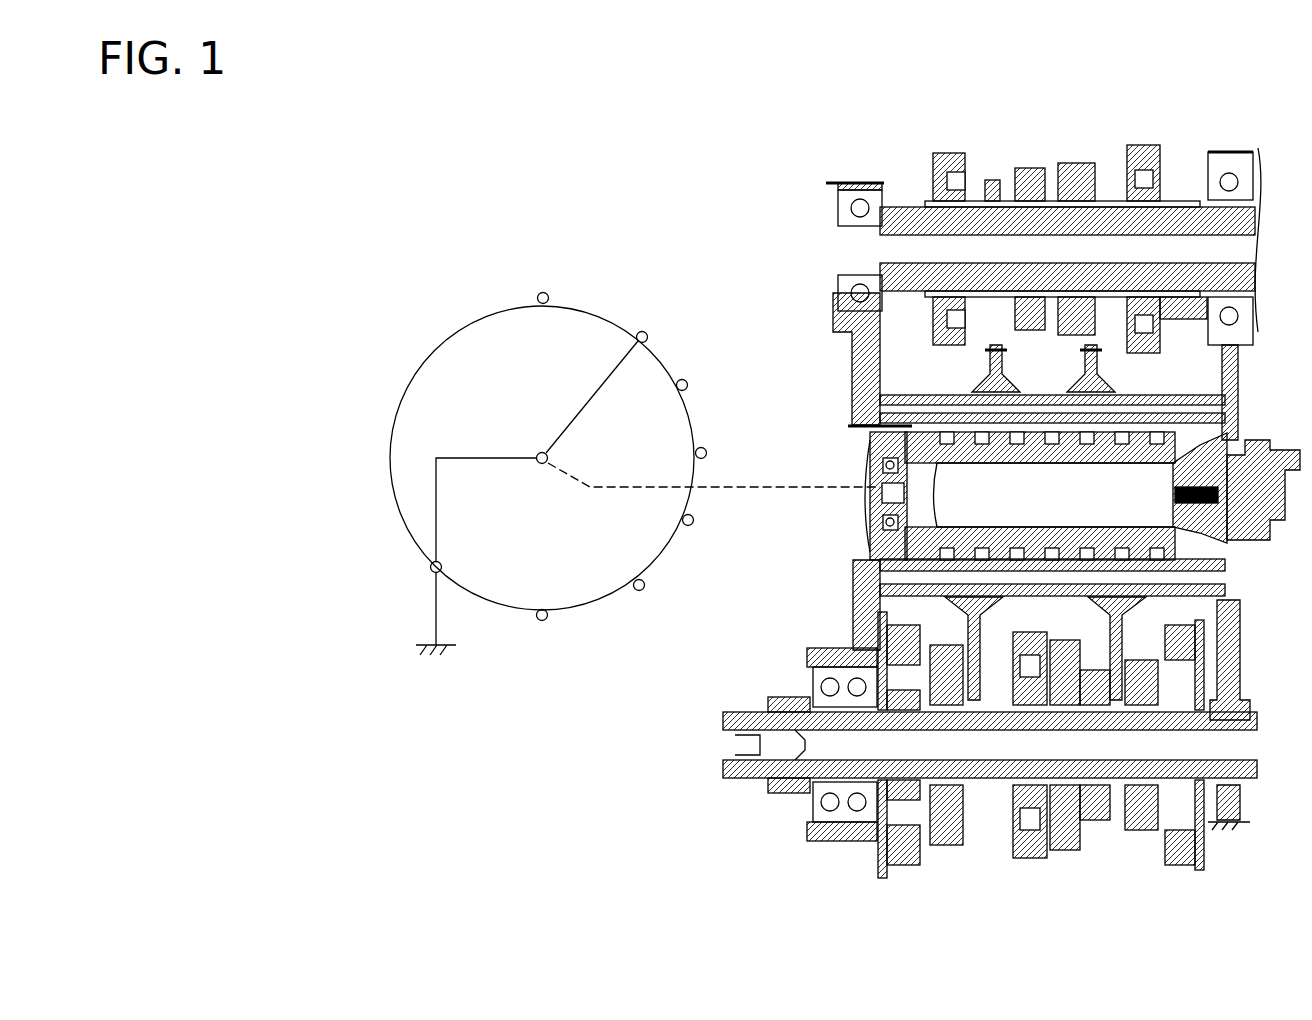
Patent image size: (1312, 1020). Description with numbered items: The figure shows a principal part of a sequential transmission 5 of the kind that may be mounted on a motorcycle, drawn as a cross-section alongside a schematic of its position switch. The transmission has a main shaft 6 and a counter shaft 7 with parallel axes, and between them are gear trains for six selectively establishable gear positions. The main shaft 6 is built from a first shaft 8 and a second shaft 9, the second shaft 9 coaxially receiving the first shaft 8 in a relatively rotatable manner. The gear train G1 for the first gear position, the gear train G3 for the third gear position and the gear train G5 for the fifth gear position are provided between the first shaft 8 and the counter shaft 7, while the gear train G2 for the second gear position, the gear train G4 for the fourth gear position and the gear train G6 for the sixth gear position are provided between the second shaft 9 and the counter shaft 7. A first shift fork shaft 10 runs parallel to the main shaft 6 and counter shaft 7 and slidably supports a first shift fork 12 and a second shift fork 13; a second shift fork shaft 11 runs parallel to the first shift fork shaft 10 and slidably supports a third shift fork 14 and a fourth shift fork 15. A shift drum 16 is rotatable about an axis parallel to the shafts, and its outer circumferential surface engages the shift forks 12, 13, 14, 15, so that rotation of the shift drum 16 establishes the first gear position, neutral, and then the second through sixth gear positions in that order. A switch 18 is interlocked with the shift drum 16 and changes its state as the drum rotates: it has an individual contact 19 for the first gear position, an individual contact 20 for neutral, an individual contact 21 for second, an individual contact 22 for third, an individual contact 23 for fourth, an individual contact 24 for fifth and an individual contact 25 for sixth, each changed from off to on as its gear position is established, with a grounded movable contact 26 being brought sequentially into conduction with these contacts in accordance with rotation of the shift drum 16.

The sequential transmission 5 is at (852, 438).
The main shaft 6 is at (979, 200).
The counter shaft 7 is at (1160, 716).
The first shaft 8 is at (912, 288).
The second shaft 9 is at (1191, 298).
The first shift fork shaft 10 is at (1136, 430).
The second shift fork shaft 11 is at (1058, 598).
The first shift fork 12 is at (1103, 366).
The second shift fork 13 is at (985, 366).
The third shift fork 14 is at (1148, 652).
The fourth shift fork 15 is at (992, 648).
The shift drum 16 is at (1229, 409).
The switch 18 is at (486, 311).
The individual contact for the first gear position 19 is at (546, 620).
The individual contact for the neutral position 20 is at (643, 590).
The individual contact for the second gear position 21 is at (694, 525).
The individual contact for the third gear position 22 is at (706, 450).
The individual contact for the fourth gear position 23 is at (685, 380).
The individual contact for the fifth gear position 24 is at (645, 332).
The individual contact for the sixth gear position 25 is at (548, 294).
The grounded movable contact 26 is at (586, 408).
The gear train for the first gear position G1 is at (926, 848).
The gear train for the second gear position G2 is at (1208, 848).
The gear train for the third gear position G3 is at (1020, 856).
The gear train for the fourth gear position G4 is at (1088, 844).
The gear train for the fifth gear position G5 is at (930, 174).
The gear train for the sixth gear position G6 is at (1121, 163).